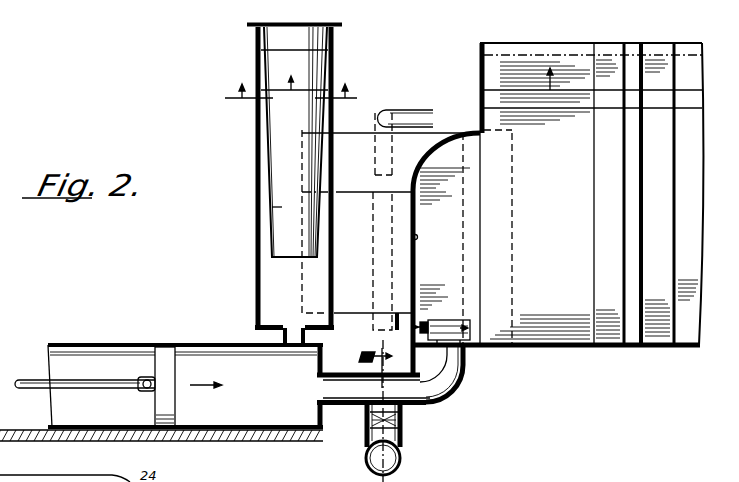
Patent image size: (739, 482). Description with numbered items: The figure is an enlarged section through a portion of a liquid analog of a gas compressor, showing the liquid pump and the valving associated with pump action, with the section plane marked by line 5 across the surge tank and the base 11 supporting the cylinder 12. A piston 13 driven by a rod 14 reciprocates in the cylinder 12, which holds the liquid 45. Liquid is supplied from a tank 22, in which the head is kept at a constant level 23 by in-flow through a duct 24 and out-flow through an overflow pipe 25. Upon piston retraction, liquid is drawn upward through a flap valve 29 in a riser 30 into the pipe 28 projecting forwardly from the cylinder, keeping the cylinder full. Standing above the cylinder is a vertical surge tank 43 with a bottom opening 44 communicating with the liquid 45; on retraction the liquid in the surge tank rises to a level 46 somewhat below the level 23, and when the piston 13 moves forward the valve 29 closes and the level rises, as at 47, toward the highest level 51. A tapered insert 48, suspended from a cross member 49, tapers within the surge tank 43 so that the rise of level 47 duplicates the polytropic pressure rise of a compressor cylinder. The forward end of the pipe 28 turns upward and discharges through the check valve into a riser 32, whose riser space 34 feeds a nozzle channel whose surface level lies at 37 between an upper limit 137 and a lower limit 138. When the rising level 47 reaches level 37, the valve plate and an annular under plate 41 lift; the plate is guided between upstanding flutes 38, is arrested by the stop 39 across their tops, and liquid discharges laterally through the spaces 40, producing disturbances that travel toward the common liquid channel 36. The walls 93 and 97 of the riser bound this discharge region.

The base 11 is at (216, 442).
The cylinder 12 is at (218, 343).
The piston 13 is at (175, 376).
The piston rod 14 is at (29, 384).
The tank 22 is at (360, 348).
The liquid level 23 is at (358, 192).
The duct 24 is at (410, 111).
The overflow pipe 25 is at (375, 270).
The pipe 28 is at (450, 397).
The flap valve 29 is at (400, 421).
The riser 30 is at (370, 440).
The riser 32 is at (469, 132).
The riser space 34 is at (412, 237).
The common liquid channel 36 is at (671, 243).
The liquid surface 37 is at (446, 319).
The flute 38 is at (474, 331).
The stop 39 is at (466, 320).
The space 40 is at (452, 318).
The under plate 41 is at (438, 349).
The surge tank 43 is at (257, 186).
The bottom opening 44 is at (283, 336).
The liquid 45 is at (237, 386).
The liquid level 46 is at (272, 208).
The liquid level 47 is at (264, 88).
The tapered insert 48 is at (272, 150).
The cross member 49 is at (269, 22).
The liquid level 51 is at (261, 50).
The section line 5- 5 is at (291, 106).
The housing wall 93 is at (480, 70).
The partition 97 is at (497, 90).
The upper limit 137 is at (541, 55).
The lower limit 138 is at (539, 114).